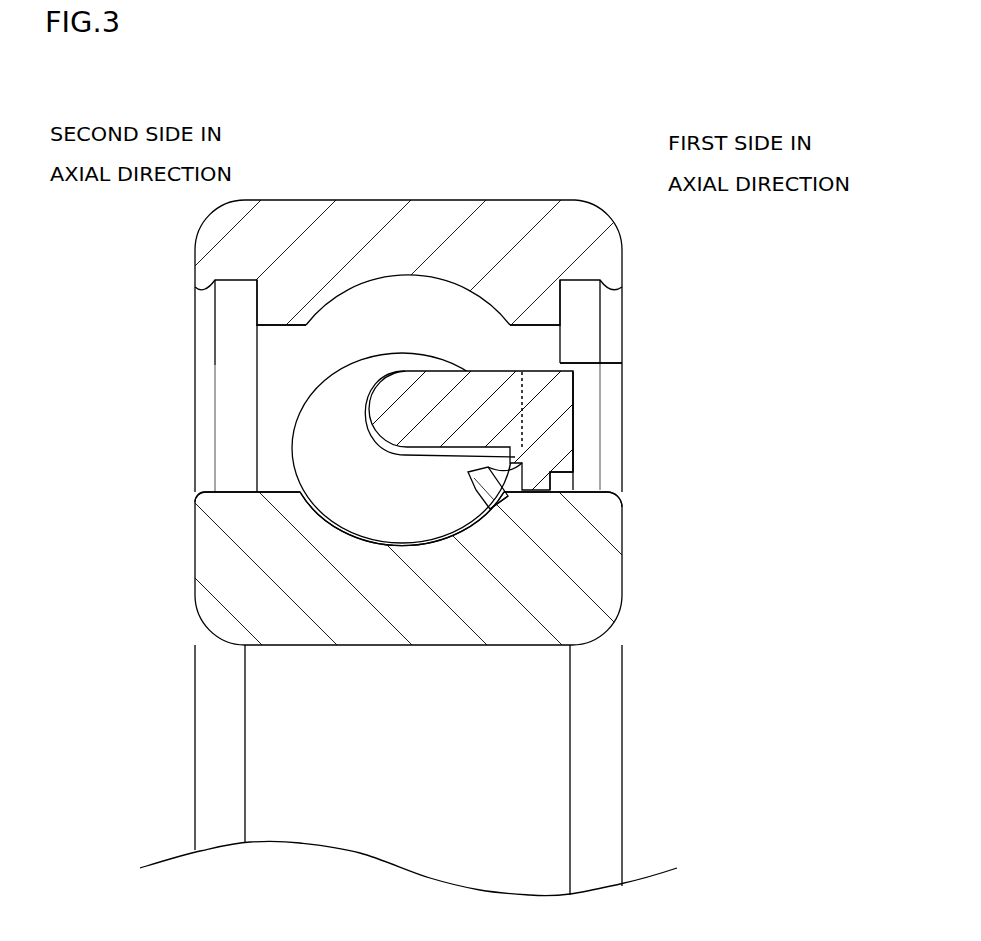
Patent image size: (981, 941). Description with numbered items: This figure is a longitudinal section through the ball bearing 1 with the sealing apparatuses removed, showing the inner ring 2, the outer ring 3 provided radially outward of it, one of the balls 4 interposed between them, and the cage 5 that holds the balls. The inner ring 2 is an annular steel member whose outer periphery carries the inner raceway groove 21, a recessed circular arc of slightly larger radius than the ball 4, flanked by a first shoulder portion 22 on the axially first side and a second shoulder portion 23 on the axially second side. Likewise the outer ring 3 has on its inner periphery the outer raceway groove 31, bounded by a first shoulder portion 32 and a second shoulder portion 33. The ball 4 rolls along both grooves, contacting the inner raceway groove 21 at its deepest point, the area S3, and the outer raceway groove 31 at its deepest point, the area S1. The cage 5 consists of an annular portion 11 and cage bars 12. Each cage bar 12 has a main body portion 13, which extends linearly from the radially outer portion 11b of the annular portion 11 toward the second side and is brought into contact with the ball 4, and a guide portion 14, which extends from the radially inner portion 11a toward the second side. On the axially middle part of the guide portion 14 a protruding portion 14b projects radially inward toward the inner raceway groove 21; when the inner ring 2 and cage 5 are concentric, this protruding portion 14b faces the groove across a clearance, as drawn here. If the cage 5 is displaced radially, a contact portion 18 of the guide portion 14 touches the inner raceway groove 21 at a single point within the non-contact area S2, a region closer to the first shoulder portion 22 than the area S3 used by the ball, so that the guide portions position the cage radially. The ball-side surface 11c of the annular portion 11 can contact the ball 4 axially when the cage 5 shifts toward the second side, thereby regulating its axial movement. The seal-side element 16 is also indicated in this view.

The ball bearing 1 is at (542, 201).
The inner ring 2 is at (628, 545).
The outer ring 3 is at (628, 256).
The ball 4 is at (305, 441).
The cage 5 is at (578, 380).
The annular portion 11 is at (578, 403).
The radially inner portion 11a is at (562, 471).
The radially outer portion 11b is at (590, 363).
The ball-side surface 11c is at (510, 356).
The cage bar 12 is at (427, 157).
The main body portion 13 is at (430, 395).
The guide portion 14 is at (489, 482).
The protruding portion 14b is at (466, 497).
The seal side portion 16 is at (575, 432).
The contact portion 18 is at (496, 510).
The inner raceway groove 21 is at (340, 520).
The first shoulder portion 22 is at (605, 517).
The second shoulder portion 23 is at (215, 511).
The outer raceway groove 31 is at (355, 288).
The first shoulder portion 32 is at (548, 312).
The second shoulder portion 33 is at (280, 307).
The area S1 is at (407, 284).
The non-contact area S2 is at (550, 484).
The area S3 is at (408, 537).